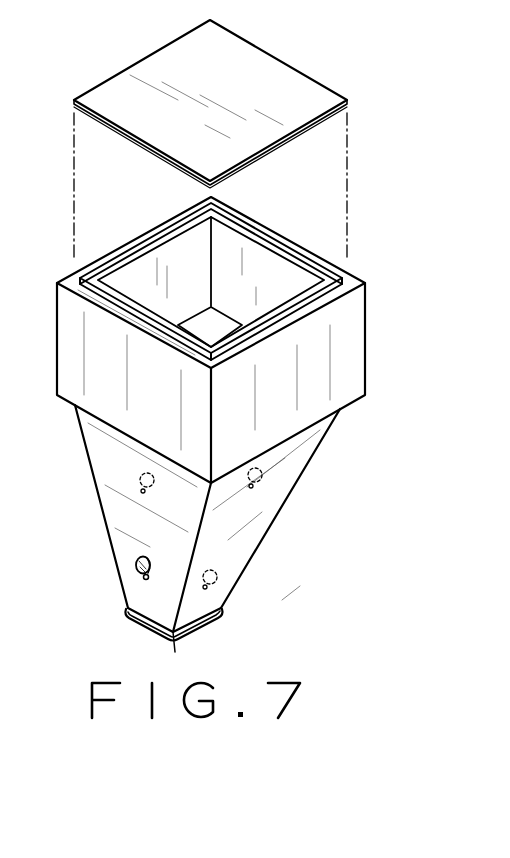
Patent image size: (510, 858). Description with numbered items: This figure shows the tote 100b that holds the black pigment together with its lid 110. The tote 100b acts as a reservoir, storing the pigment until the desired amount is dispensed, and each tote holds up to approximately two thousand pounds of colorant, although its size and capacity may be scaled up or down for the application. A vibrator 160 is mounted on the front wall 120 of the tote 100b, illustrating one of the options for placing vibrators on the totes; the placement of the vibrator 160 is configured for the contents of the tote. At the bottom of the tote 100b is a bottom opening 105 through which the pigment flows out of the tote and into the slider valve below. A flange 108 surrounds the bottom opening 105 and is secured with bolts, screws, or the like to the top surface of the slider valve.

The lid 110 is at (248, 68).
The tote 100b is at (322, 393).
The front wall 120 is at (122, 498).
The vibrator 160 is at (136, 565).
The bottom opening 105 is at (172, 651).
The flange 108 is at (213, 627).